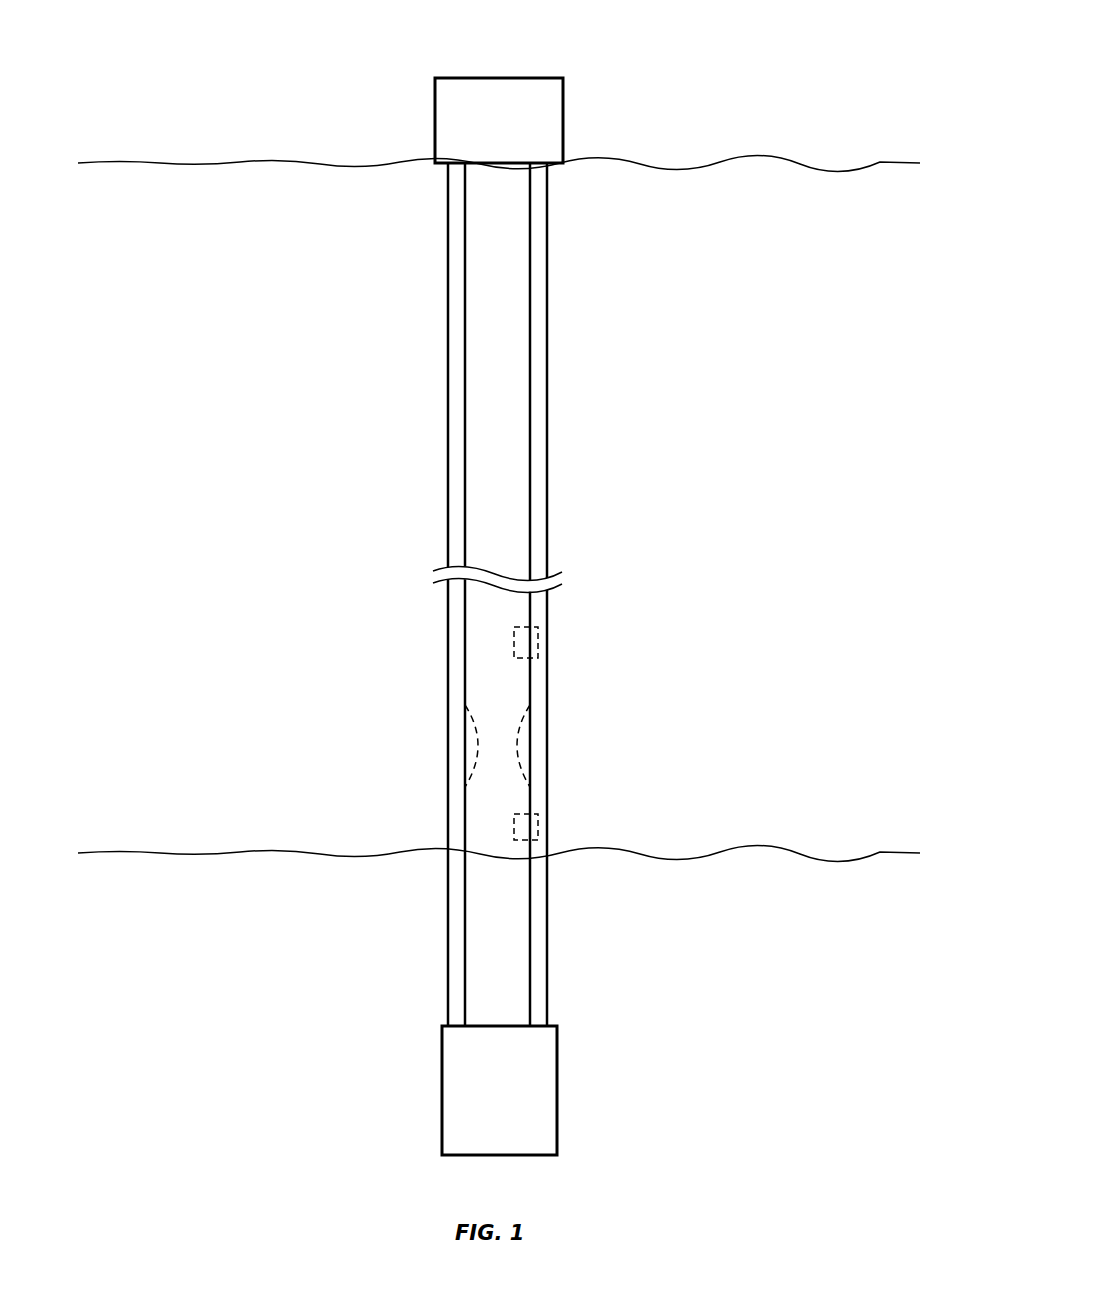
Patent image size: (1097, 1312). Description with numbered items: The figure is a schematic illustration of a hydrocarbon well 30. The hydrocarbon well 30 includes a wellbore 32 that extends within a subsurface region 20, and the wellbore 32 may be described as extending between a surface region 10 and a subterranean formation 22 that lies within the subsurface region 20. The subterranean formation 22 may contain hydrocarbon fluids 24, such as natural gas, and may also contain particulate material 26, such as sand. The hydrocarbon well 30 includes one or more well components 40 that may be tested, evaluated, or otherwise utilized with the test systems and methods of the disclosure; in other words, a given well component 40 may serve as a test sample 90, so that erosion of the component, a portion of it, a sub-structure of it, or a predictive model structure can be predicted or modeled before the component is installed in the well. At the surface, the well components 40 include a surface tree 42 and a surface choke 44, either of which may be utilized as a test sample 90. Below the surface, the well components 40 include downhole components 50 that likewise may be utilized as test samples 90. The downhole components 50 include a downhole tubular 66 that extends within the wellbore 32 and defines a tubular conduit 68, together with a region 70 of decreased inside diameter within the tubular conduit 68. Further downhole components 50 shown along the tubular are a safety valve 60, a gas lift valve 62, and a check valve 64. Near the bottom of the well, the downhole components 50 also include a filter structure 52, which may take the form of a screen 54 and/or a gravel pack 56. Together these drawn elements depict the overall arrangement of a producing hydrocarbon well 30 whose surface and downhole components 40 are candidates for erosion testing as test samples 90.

The surface region 10 is at (158, 47).
The subsurface region 20 is at (158, 200).
The subterranean formation 22 is at (149, 895).
The hydrocarbon fluids 24 is at (211, 888).
The particulate material 26 is at (272, 888).
The hydrocarbon well 30 is at (350, 63).
The wellbore 32 is at (464, 372).
The well components 40 is at (378, 130).
The surface tree 42 is at (550, 101).
The surface choke 44 is at (550, 135).
The downhole components 50 is at (381, 260).
The filter structure 52 is at (433, 1067).
The screen 54 is at (457, 1105).
The gravel pack 56 is at (457, 1138).
The safety valve 60 is at (540, 645).
The gas lift valve 62 is at (540, 821).
The check valve 64 is at (545, 846).
The downhole tubular 66 is at (462, 903).
The tubular conduit 68 is at (478, 945).
The region of decreased inside diameter 70 is at (470, 748).
The test sample 90 is at (575, 75).